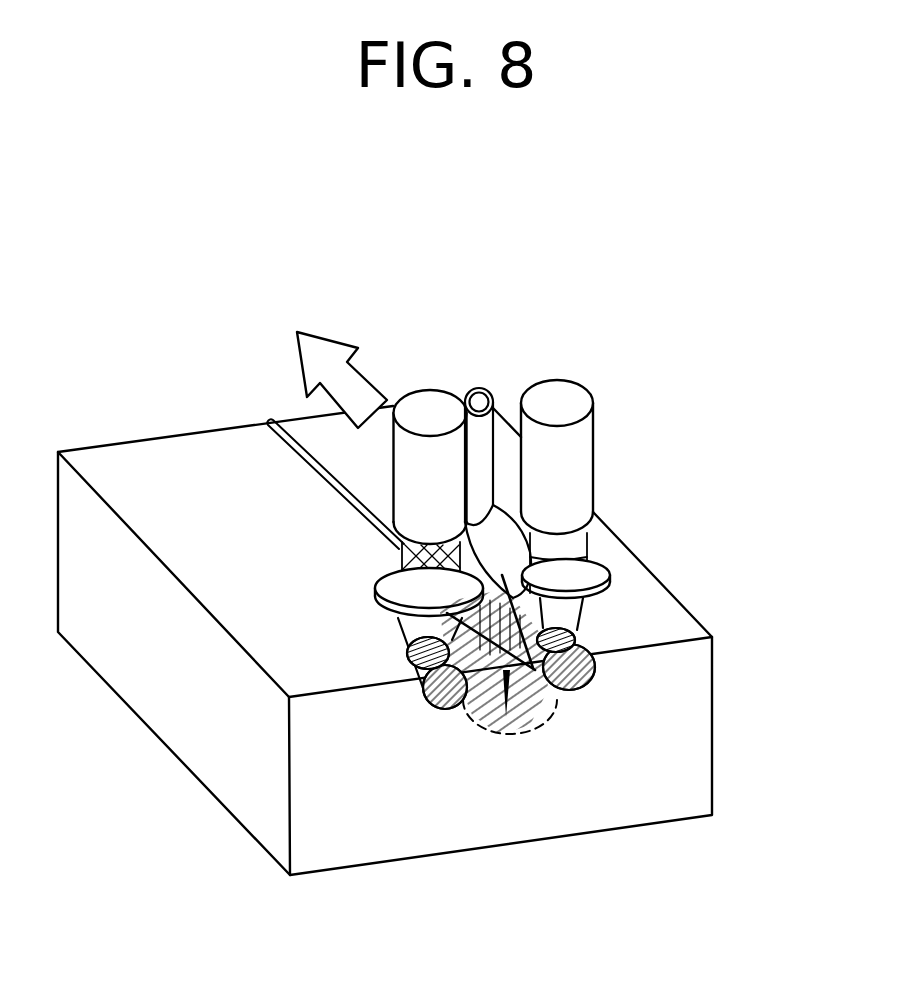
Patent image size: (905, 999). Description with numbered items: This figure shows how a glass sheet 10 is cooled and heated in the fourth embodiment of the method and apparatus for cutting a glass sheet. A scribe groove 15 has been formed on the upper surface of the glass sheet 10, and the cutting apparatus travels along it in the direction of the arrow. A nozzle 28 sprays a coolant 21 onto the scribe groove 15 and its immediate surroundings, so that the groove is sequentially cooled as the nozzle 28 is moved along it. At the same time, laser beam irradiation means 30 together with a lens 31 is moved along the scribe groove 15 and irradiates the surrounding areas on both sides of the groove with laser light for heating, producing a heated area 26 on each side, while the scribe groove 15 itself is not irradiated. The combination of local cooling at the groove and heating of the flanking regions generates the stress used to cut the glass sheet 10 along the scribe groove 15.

The workpiece 10 is at (182, 717).
The scribe groove 15 is at (303, 462).
The coolant 21 is at (463, 660).
The heated area 26 is at (578, 640).
The nozzle 28 is at (533, 668).
The laser beam irradiation means 30 is at (585, 443).
The lens 31 is at (578, 562).